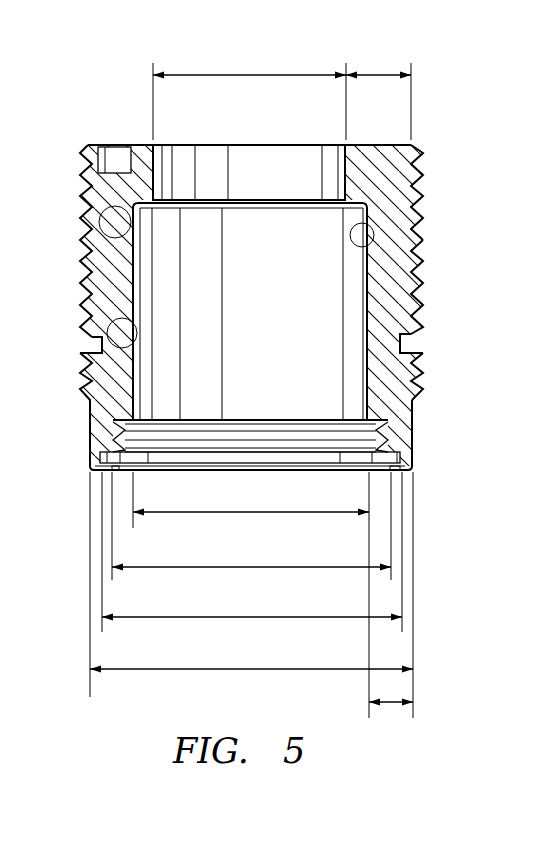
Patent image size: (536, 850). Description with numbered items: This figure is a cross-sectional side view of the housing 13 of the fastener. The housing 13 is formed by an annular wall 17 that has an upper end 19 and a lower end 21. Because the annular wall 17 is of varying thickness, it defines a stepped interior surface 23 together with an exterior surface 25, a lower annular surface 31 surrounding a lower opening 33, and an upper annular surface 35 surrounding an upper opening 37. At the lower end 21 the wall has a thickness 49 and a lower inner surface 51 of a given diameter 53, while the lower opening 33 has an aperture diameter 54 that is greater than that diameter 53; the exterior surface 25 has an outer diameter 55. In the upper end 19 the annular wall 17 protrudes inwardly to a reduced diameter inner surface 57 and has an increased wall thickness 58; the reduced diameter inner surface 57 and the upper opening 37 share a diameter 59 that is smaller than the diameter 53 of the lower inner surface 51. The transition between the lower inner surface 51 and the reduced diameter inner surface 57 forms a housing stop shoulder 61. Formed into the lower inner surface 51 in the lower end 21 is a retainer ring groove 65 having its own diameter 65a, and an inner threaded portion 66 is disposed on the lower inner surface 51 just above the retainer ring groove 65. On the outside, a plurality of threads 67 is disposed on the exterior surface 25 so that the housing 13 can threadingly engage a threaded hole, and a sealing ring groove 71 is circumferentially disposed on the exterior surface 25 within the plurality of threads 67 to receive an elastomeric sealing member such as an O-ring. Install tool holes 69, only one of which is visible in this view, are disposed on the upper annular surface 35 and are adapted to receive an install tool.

The housing 13 is at (108, 64).
The annular wall 17 is at (405, 290).
The upper end 19 is at (405, 180).
The lower end 21 is at (405, 423).
The stepped interior surface 23 is at (374, 236).
The exterior surface 25 is at (413, 452).
The lower annular surface 31 is at (398, 472).
The lower opening 33 is at (118, 470).
The upper annular surface 35 is at (367, 143).
The upper opening 37 is at (158, 162).
The thickness 49 is at (390, 705).
The lower inner surface 51 is at (108, 322).
The diameter 53 is at (218, 513).
The aperture diameter 54 is at (240, 569).
The outer diameter 55 is at (213, 671).
The reduced diameter inner surface 57 is at (343, 188).
The increased wall thickness 58 is at (383, 73).
The diameter 59 is at (248, 73).
The housing stop shoulder 61 is at (99, 212).
The retainer ring groove 65 is at (100, 458).
The diameter 65a is at (191, 619).
The inner threaded portion 66 is at (113, 430).
The plurality of threads 67 is at (80, 167).
The install tool holes 69 is at (128, 155).
The sealing ring groove 71 is at (412, 351).